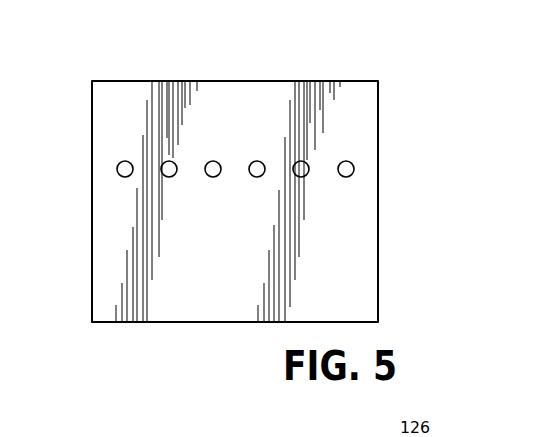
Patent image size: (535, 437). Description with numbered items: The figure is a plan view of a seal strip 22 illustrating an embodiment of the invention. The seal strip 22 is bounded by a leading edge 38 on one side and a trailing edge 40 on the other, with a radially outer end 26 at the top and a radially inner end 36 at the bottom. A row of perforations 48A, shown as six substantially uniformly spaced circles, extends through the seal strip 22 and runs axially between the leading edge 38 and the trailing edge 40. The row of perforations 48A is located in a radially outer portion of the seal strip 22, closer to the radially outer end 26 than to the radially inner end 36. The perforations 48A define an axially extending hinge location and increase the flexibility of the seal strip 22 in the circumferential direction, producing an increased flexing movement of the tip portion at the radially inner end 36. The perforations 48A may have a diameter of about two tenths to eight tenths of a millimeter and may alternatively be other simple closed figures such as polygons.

The seal strip 22 is at (388, 95).
The radially outer end 26 is at (237, 81).
The radially inner end 36 is at (174, 322).
The leading edge 38 is at (92, 232).
The trailing edge 40 is at (378, 295).
The perforations 48A is at (122, 161).